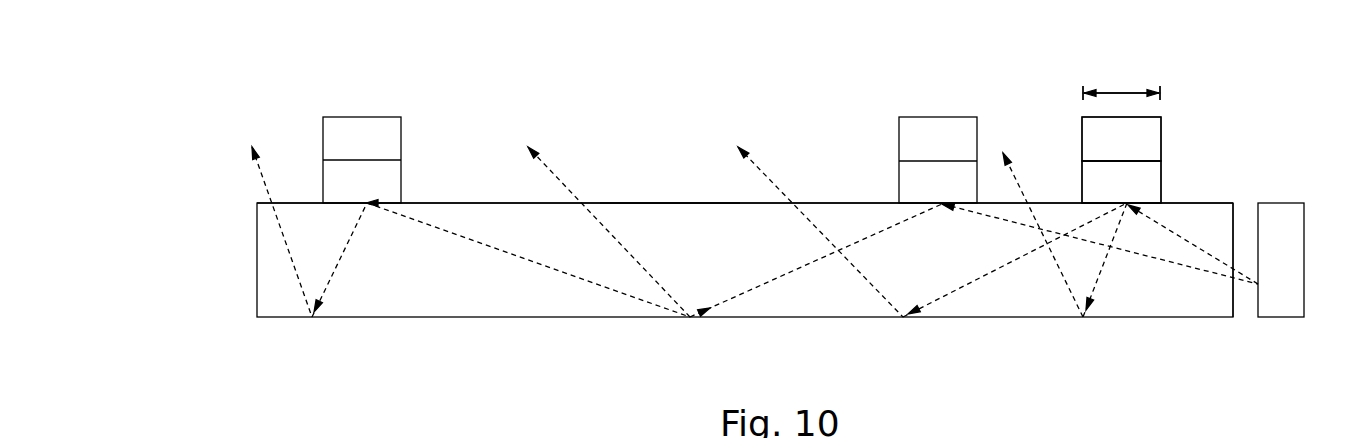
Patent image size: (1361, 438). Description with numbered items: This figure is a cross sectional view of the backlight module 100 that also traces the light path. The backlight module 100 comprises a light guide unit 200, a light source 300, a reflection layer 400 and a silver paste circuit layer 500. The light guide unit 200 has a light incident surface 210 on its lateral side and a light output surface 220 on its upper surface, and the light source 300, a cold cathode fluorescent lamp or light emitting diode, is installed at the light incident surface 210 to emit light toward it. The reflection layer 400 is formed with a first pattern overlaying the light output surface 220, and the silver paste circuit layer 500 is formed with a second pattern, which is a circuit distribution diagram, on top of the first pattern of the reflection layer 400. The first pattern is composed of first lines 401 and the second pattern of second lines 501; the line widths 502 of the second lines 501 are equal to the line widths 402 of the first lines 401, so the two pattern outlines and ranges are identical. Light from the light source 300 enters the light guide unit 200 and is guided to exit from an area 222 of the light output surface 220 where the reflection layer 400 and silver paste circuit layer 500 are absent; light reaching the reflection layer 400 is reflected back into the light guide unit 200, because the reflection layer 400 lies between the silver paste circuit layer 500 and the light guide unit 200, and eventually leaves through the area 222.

The backlight module 100 is at (736, 206).
The light guide unit 200 is at (252, 260).
The light incident surface 210 is at (1233, 215).
The light output surface 220 is at (829, 203).
The area 222 is at (670, 203).
The light source 300 is at (1282, 302).
The reflection layer 400 is at (1172, 176).
The first lines 401 is at (1093, 178).
The line widths 402 is at (1122, 90).
The silver paste circuit layer 500 is at (1172, 132).
The second lines 501 is at (1093, 137).
The line widths 502 is at (1123, 51).